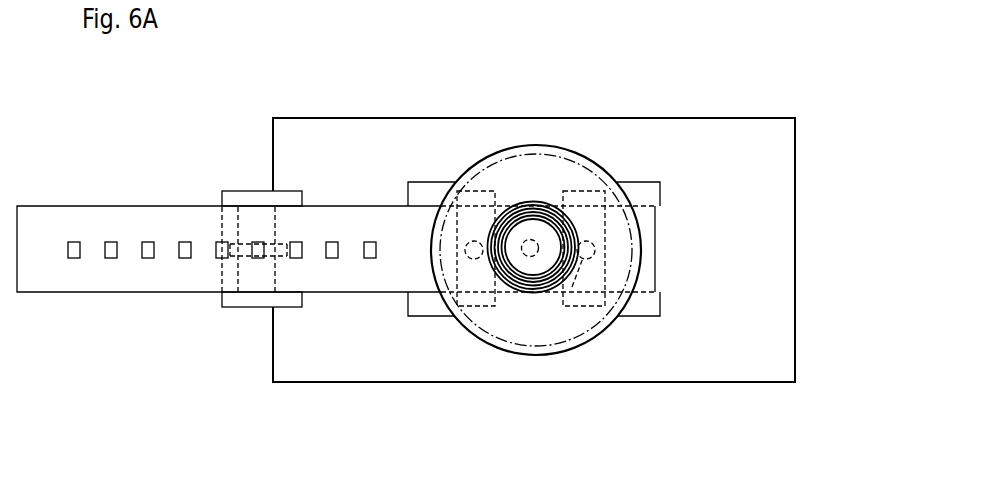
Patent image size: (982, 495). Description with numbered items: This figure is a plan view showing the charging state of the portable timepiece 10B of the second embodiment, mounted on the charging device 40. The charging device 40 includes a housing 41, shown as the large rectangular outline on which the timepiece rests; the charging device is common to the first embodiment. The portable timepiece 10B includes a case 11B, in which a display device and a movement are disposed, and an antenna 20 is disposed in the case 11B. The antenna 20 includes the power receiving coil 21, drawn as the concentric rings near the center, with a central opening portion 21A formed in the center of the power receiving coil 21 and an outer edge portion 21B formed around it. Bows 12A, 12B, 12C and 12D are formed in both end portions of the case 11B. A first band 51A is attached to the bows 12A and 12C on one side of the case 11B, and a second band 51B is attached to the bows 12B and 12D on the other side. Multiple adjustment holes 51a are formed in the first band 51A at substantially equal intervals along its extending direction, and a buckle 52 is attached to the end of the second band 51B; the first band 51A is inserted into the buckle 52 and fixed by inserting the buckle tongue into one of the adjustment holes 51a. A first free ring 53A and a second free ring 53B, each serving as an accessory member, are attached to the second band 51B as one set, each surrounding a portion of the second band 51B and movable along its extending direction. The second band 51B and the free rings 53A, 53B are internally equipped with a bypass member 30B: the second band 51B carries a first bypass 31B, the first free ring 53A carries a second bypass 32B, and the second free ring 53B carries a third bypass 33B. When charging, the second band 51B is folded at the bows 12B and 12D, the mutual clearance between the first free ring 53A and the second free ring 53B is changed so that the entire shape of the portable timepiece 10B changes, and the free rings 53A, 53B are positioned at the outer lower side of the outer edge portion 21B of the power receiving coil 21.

The portable timepiece 10B is at (589, 144).
The case 11B is at (547, 168).
The bow 12A is at (430, 317).
The bow 12B is at (647, 317).
The bow 12C is at (423, 190).
The bow 12D is at (658, 192).
The antenna 20 is at (534, 244).
The power receiving coil 21 is at (537, 283).
The central opening portion 21A is at (532, 234).
The outer edge portion 21B is at (572, 287).
The bypass member 30B is at (577, 274).
The first bypass 31B is at (530, 257).
The second bypass 32B is at (595, 248).
The third bypass 33B is at (474, 241).
The charging device 40 is at (732, 384).
The housing 41 is at (760, 370).
The first band 51A is at (332, 206).
The second band 51B is at (515, 292).
The adjustment hole 51a is at (148, 241).
The buckle 52 is at (250, 308).
The first free ring 53A is at (592, 308).
The second free ring 53B is at (477, 307).